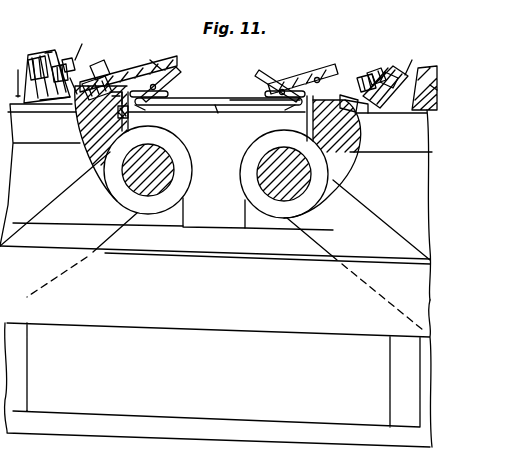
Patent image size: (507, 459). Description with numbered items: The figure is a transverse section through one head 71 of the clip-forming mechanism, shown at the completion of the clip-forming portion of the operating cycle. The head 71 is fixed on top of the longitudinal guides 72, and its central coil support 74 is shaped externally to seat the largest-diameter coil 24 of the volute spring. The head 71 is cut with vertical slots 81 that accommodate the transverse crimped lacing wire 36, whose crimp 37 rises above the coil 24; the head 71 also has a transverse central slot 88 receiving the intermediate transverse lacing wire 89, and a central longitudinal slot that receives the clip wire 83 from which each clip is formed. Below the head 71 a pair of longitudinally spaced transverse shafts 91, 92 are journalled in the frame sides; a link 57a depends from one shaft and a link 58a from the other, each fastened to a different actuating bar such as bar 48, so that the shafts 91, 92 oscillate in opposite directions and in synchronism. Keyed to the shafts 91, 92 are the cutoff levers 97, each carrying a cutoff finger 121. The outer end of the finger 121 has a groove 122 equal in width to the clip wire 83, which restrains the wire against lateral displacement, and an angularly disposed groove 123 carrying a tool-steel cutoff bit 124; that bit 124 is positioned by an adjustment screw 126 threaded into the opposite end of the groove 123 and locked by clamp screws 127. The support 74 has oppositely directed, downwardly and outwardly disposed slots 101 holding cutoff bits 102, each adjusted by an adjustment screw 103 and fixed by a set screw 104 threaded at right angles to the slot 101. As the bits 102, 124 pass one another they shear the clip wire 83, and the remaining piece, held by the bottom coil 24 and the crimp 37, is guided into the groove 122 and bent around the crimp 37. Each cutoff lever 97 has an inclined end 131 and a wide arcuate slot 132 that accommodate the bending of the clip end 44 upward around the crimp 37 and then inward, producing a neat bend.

The largest-diameter coil 24 is at (140, 100).
The lacing wire 36 is at (120, 125).
The crimp 37 is at (160, 104).
The clip end 44 is at (180, 99).
The actuating bar 48 is at (162, 316).
The link 57a is at (357, 240).
The link 58a is at (102, 232).
The head 71 is at (87, 40).
The longitudinal guide 72 is at (213, 140).
The coil support 74 is at (47, 53).
The vertical slot 81 is at (218, 126).
The longitudinal wire 83 is at (209, 117).
The transverse central slot 88 is at (22, 70).
The intermediate transverse lacing wire 89 is at (16, 97).
The transverse shaft 91 is at (246, 198).
The transverse shaft 92 is at (163, 185).
The cutoff lever 97 is at (100, 158).
The slot 101 is at (56, 61).
The cutoff bit 102 is at (70, 98).
The adjustment screw 103 is at (32, 57).
The set screw 104 is at (96, 80).
The cutoff finger 121 is at (152, 80).
The groove 122 is at (175, 84).
The angularly disposed groove 123 is at (138, 60).
The cutoff bit 124 is at (178, 72).
The adjustment screw 126 is at (95, 64).
The clamp screw 127 is at (118, 78).
The inclined end 131 is at (212, 100).
The wide arcuate slot 132 is at (120, 108).